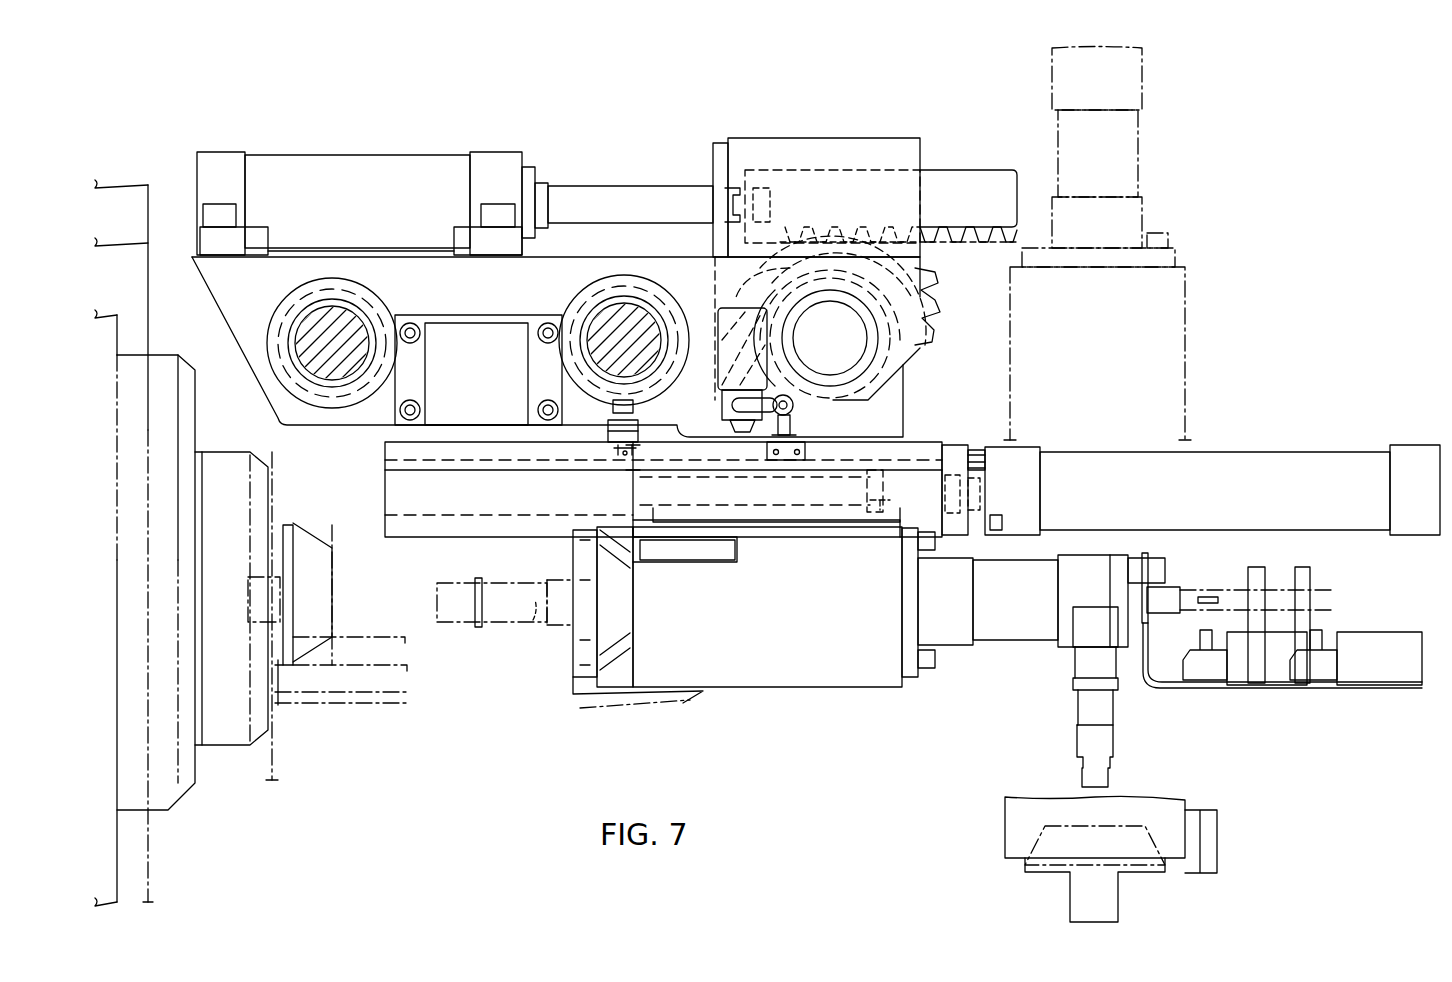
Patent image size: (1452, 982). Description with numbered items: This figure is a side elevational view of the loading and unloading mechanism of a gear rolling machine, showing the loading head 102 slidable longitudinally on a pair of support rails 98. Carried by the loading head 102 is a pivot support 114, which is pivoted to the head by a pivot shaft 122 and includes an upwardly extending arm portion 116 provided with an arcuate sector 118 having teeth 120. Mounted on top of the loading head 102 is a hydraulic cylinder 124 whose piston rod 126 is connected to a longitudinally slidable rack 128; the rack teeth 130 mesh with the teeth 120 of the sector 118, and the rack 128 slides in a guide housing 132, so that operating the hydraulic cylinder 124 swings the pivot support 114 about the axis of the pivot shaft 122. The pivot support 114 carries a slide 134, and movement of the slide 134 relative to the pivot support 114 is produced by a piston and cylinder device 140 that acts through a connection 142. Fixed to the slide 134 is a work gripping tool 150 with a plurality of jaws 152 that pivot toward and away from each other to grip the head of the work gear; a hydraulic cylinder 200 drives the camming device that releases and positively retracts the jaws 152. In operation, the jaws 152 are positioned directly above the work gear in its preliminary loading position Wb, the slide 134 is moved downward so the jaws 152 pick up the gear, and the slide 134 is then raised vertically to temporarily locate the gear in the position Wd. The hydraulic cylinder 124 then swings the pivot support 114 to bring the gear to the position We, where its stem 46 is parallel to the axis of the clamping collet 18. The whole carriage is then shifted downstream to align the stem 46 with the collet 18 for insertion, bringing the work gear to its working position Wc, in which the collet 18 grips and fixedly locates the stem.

The clamping collet 18 is at (262, 454).
The stem portion 46 is at (437, 602).
The support rails 98 is at (355, 315).
The loading head 102 is at (220, 318).
The pivot support 114 is at (418, 538).
The arm portion 116 is at (770, 286).
The arcuate sector 118 is at (906, 352).
The teeth 120 is at (934, 320).
The pivot shaft 122 is at (835, 365).
The hydraulic cylinder 124 is at (360, 170).
The piston rod 126 is at (590, 190).
The rack 128 is at (965, 176).
The rack teeth 130 is at (985, 242).
The guide housing 132 is at (870, 146).
The slide 134 is at (633, 490).
The piston and cylinder device 140 is at (1215, 452).
The connection 142 is at (982, 462).
The work gripping tool 150 is at (815, 697).
The jaws 152 is at (573, 694).
The hydraulic cylinder 200 is at (998, 650).
The working position Wc is at (300, 532).
The swung position We is at (533, 625).
The raised position Wd is at (1072, 712).
The preliminary loading position Wb is at (1070, 896).